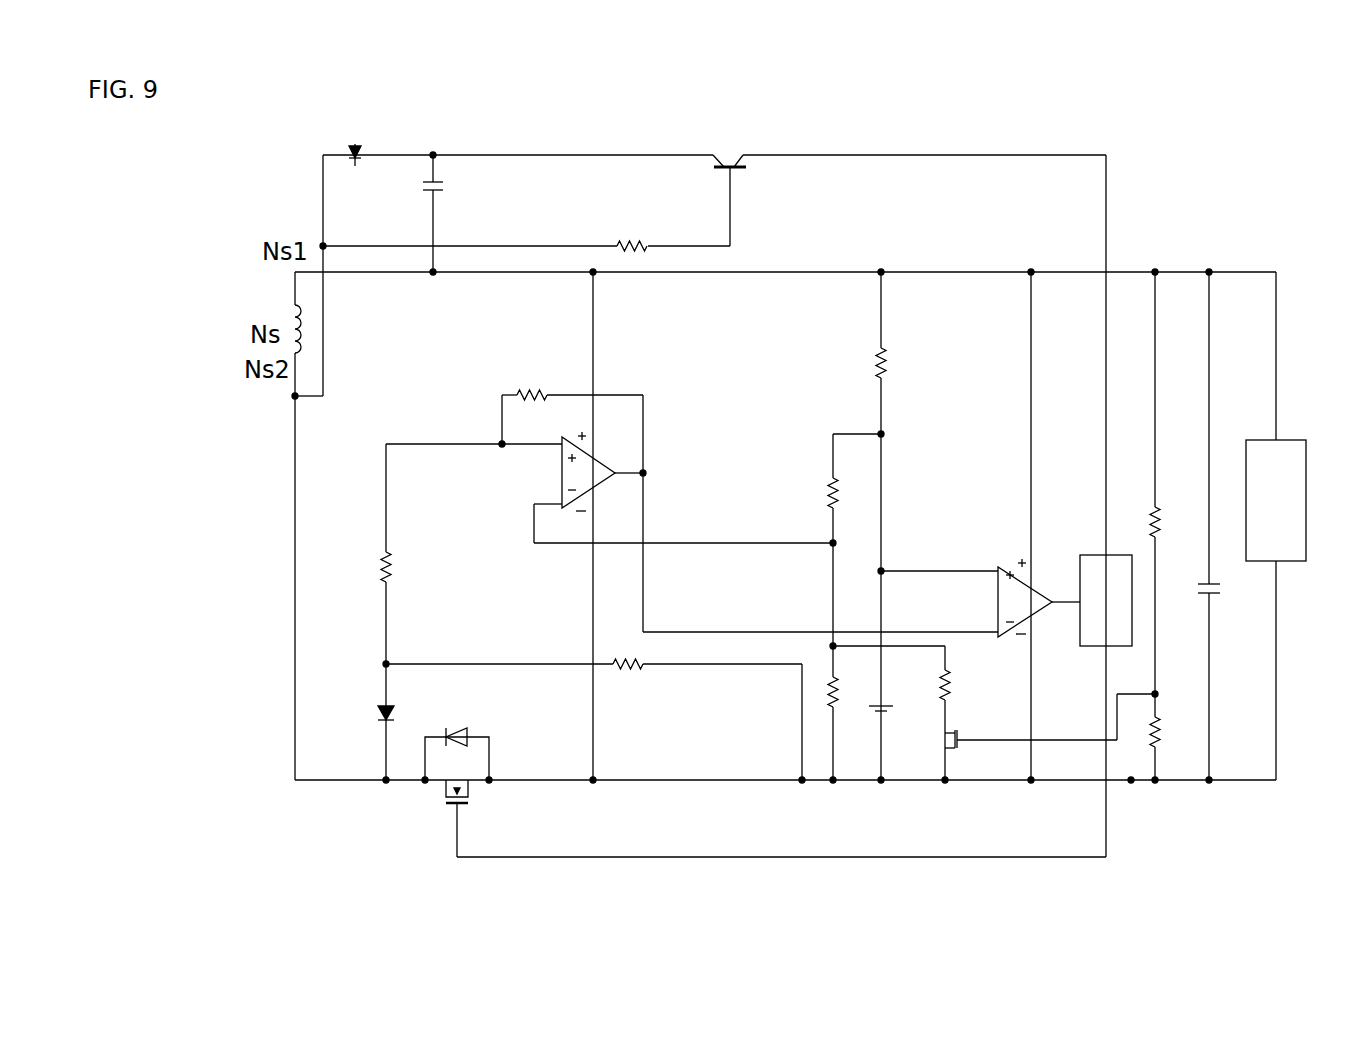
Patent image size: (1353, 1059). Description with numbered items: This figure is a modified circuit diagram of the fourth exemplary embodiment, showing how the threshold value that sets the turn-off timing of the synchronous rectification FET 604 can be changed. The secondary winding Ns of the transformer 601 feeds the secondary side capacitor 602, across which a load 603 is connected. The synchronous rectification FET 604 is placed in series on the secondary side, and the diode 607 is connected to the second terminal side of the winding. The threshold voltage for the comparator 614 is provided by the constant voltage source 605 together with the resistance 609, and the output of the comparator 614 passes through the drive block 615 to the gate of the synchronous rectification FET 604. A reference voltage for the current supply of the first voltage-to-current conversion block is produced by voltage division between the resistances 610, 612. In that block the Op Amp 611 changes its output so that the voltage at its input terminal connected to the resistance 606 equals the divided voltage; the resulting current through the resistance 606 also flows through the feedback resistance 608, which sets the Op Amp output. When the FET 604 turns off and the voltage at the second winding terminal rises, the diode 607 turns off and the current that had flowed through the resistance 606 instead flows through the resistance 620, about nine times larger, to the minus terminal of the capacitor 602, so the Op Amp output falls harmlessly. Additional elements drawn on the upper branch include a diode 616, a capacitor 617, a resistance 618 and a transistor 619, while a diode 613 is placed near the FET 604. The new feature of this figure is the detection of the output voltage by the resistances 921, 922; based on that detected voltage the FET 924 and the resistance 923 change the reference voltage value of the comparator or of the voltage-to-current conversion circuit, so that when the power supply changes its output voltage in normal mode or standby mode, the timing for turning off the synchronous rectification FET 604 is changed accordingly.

The transformer 601 is at (284, 309).
The secondary side capacitor 602 is at (1218, 592).
The load 603 is at (1290, 438).
The synchronous rectification FET 604 is at (468, 797).
The constant voltage source 605 is at (884, 705).
The resistance 606 is at (391, 563).
The diode 607 is at (382, 705).
The resistance 608 is at (538, 388).
The resistance 609 is at (887, 362).
The resistance 610 is at (824, 496).
The Op Amp 611 is at (558, 477).
The resistance 612 is at (826, 693).
The diode 613 is at (468, 730).
The comparator 614 is at (1000, 561).
The drive circuit 615 is at (1092, 551).
The diode 616 is at (355, 165).
The capacitor 617 is at (444, 184).
The resistor 618 is at (630, 237).
The transistor 619 is at (740, 170).
The resistance 620 is at (630, 668).
The resistance 921 is at (1163, 512).
The resistance 922 is at (1177, 713).
The resistance 923 is at (950, 680).
The FET 924 is at (957, 737).